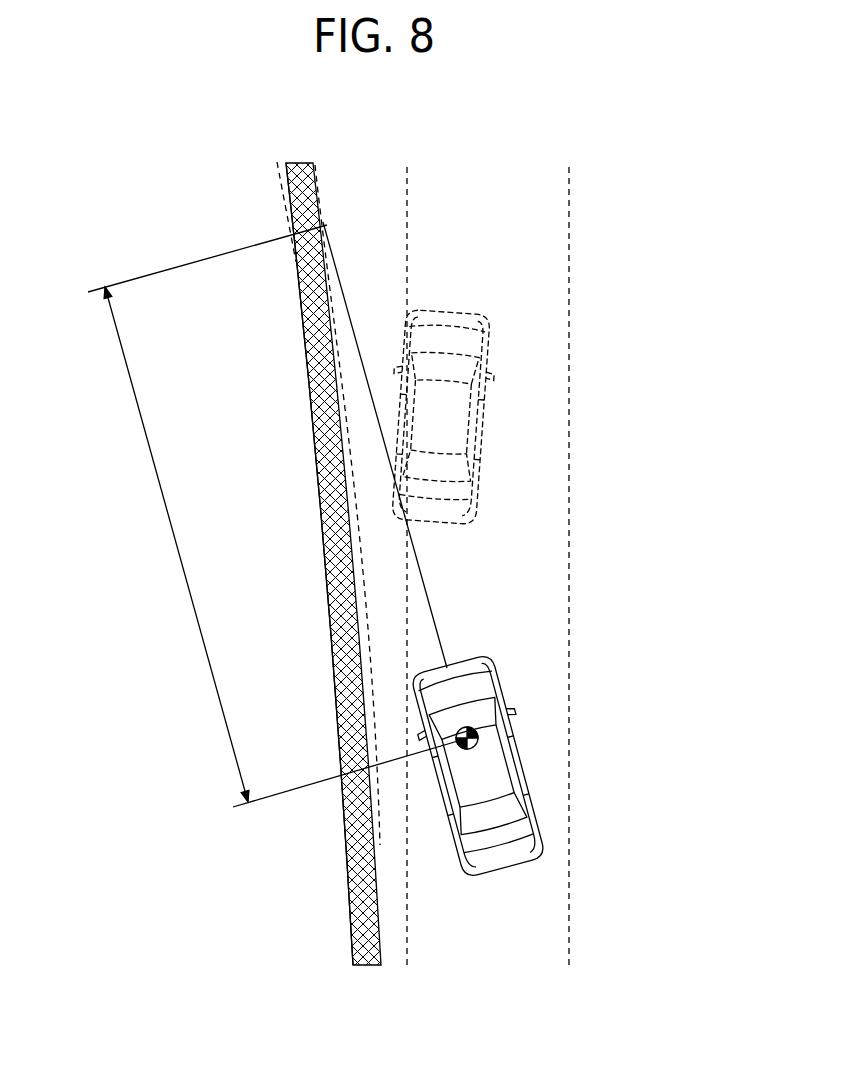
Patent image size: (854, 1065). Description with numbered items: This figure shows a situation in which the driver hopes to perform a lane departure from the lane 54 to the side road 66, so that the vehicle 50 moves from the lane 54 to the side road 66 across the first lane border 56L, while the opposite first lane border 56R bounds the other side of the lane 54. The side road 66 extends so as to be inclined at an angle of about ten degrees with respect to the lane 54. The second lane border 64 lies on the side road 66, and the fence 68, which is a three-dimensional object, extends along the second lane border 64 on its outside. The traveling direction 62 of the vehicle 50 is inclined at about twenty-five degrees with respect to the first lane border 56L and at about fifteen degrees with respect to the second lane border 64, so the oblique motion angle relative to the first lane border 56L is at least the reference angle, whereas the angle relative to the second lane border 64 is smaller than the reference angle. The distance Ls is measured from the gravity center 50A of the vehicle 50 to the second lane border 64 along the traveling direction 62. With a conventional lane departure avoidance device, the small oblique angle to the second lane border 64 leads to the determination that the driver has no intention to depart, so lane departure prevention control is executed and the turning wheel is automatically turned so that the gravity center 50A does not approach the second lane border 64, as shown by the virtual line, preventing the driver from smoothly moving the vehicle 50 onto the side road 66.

The vehicle 50 is at (501, 872).
The gravity center 50A is at (480, 717).
The lane 54 is at (490, 179).
The first lane border 56L is at (407, 243).
The first lane border 56R is at (570, 243).
The traveling direction 62 is at (430, 605).
The second lane border 64 is at (318, 443).
The side road 66 is at (369, 177).
The fence 68 is at (325, 600).
The distance Ls is at (273, 516).